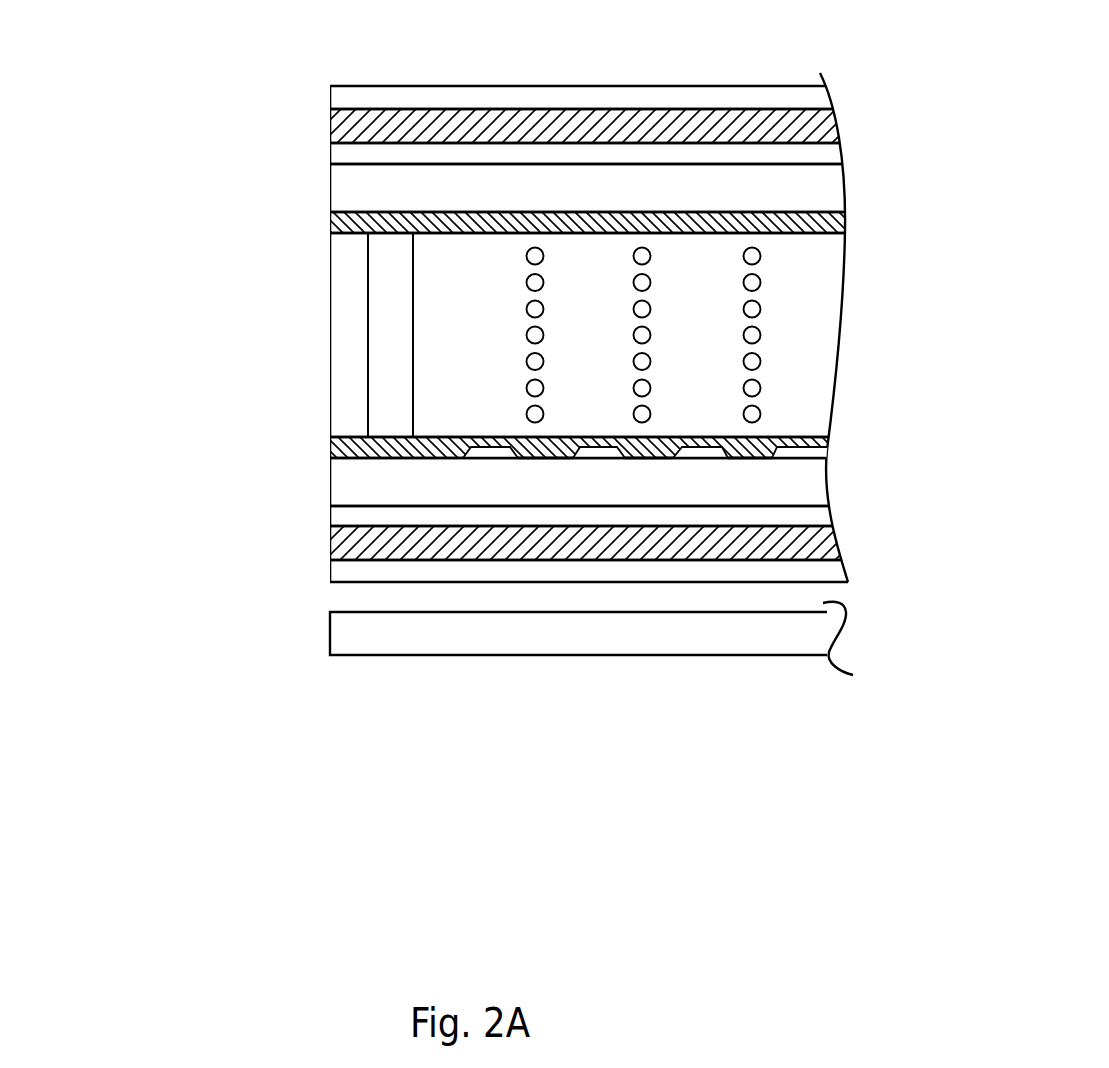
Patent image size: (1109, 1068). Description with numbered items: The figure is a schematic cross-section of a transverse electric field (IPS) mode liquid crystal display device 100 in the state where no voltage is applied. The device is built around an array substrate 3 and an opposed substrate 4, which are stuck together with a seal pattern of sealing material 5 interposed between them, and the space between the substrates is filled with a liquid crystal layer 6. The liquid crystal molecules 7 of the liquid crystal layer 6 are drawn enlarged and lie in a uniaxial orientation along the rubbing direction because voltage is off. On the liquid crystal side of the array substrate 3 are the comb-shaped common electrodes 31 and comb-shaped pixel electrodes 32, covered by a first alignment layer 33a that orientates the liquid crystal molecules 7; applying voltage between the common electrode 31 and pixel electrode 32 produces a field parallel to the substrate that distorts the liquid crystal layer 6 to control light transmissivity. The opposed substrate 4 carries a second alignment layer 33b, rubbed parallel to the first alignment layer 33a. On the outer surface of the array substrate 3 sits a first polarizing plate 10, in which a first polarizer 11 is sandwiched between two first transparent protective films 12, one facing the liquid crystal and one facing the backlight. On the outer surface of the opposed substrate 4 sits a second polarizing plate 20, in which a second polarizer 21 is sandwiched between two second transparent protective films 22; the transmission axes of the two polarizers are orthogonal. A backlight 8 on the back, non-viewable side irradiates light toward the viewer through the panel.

The liquid crystal display device 100 is at (778, 34).
The second polarizing plate 20 is at (132, 25).
The second transparent protective films 22 is at (340, 94).
The second polarizer 21 is at (340, 122).
The opposed substrate 4 is at (340, 187).
The second alignment layer 33b is at (340, 222).
The sealing material 5 is at (383, 350).
The liquid crystal layer 6 is at (795, 370).
The liquid crystal molecules 7 is at (757, 308).
The first alignment layer 33a is at (340, 443).
The common electrode 31 is at (490, 450).
The pixel electrode 32 is at (590, 452).
The array substrate 3 is at (342, 474).
The first polarizing plate 10 is at (138, 498).
The first transparent protective films 12 is at (340, 514).
The first polarizer 11 is at (340, 540).
The backlight 8 is at (340, 630).